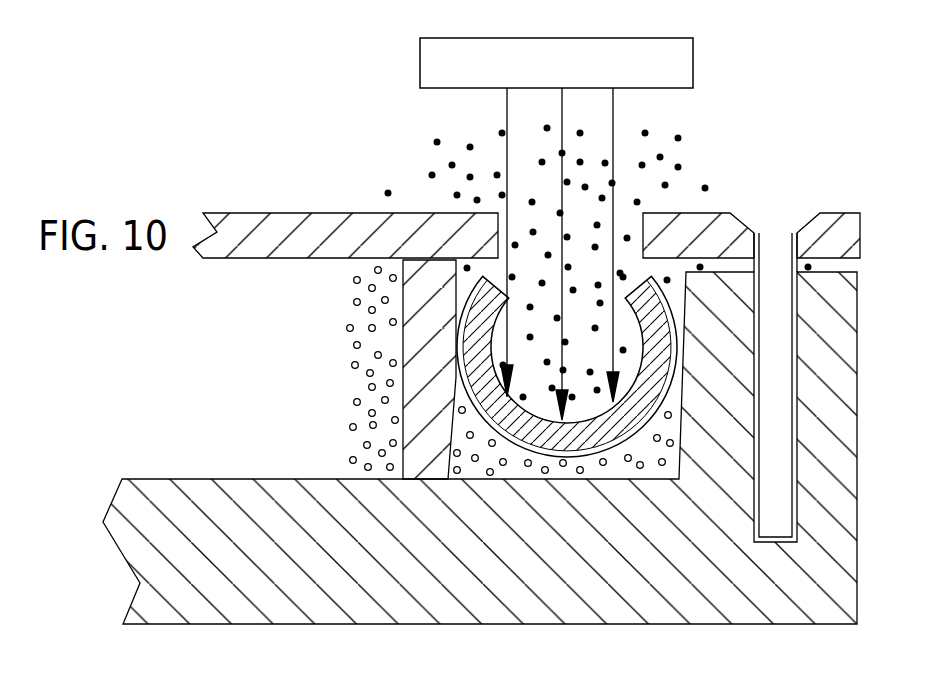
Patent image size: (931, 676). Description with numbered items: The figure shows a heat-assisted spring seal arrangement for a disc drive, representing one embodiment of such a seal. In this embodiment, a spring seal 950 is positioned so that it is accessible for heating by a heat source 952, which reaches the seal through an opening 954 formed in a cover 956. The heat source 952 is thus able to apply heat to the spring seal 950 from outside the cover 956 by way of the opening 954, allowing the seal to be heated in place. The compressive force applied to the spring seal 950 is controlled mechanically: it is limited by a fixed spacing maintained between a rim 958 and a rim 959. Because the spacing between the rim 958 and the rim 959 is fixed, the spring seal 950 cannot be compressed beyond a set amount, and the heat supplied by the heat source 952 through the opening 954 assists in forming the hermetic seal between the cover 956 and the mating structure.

The spring seal 950 is at (458, 338).
The heat source 952 is at (557, 75).
The opening 954 is at (573, 205).
The cover 956 is at (288, 213).
The rim 958 is at (456, 395).
The rim 959 is at (680, 363).